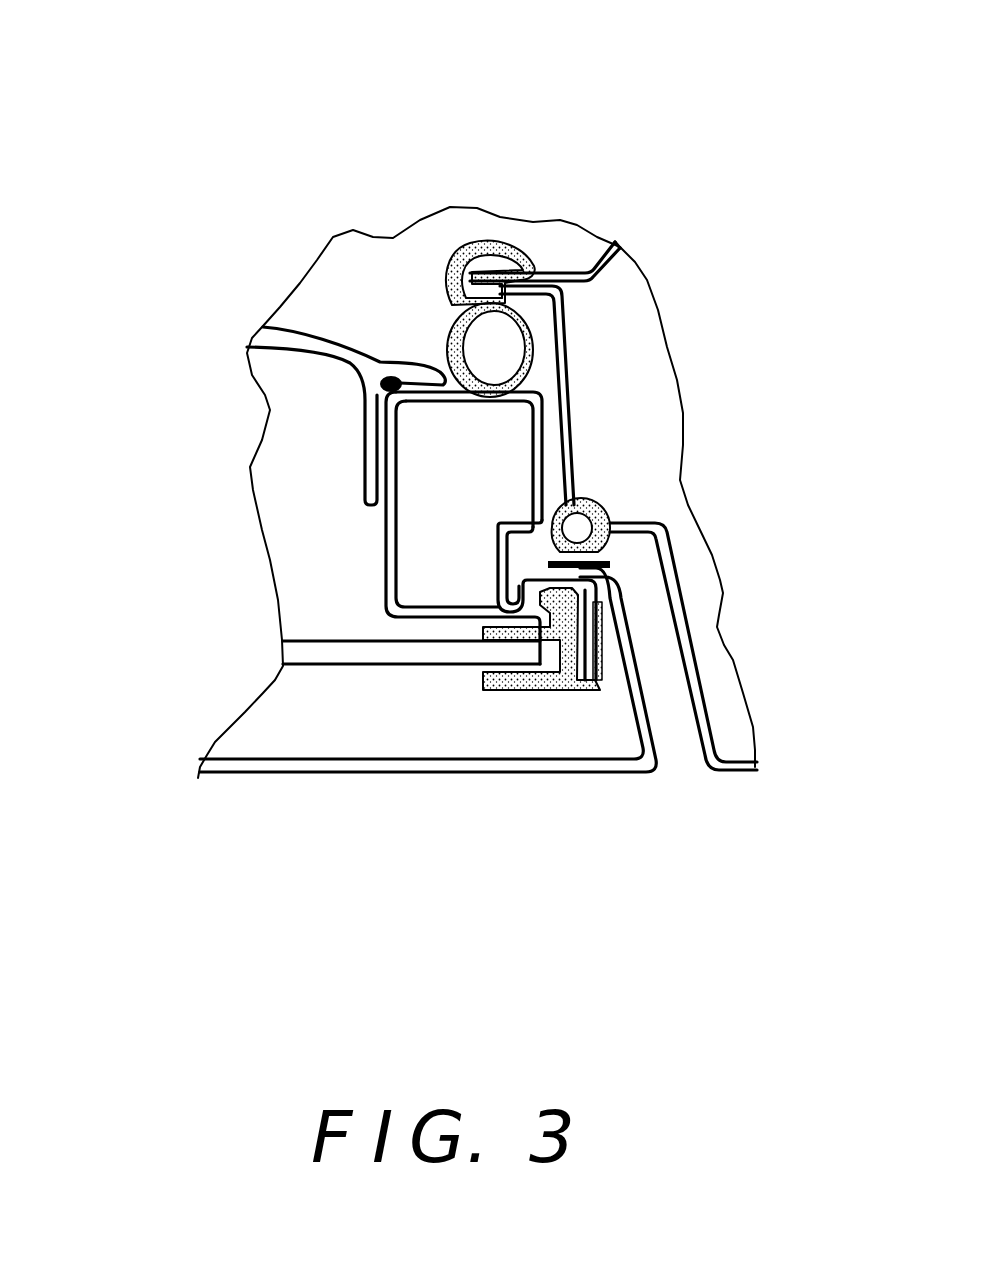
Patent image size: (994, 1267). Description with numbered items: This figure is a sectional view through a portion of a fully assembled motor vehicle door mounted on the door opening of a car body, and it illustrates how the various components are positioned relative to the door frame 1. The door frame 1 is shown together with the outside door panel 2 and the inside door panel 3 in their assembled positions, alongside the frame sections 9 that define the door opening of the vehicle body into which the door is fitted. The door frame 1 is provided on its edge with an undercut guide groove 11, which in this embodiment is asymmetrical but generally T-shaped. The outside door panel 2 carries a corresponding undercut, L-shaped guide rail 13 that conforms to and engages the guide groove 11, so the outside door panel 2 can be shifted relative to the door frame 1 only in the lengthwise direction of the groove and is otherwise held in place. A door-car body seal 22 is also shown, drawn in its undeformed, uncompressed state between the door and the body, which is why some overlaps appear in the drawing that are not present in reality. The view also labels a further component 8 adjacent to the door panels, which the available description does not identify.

The door frame 1 is at (387, 523).
The outside door panel 2 is at (333, 773).
The inside door panel 3 is at (285, 330).
The door inner panel 8 is at (410, 655).
The frame sections 9 is at (572, 268).
The guide groove 11 is at (500, 555).
The guide rail 13 is at (517, 563).
The door-car body seal 22 is at (532, 306).